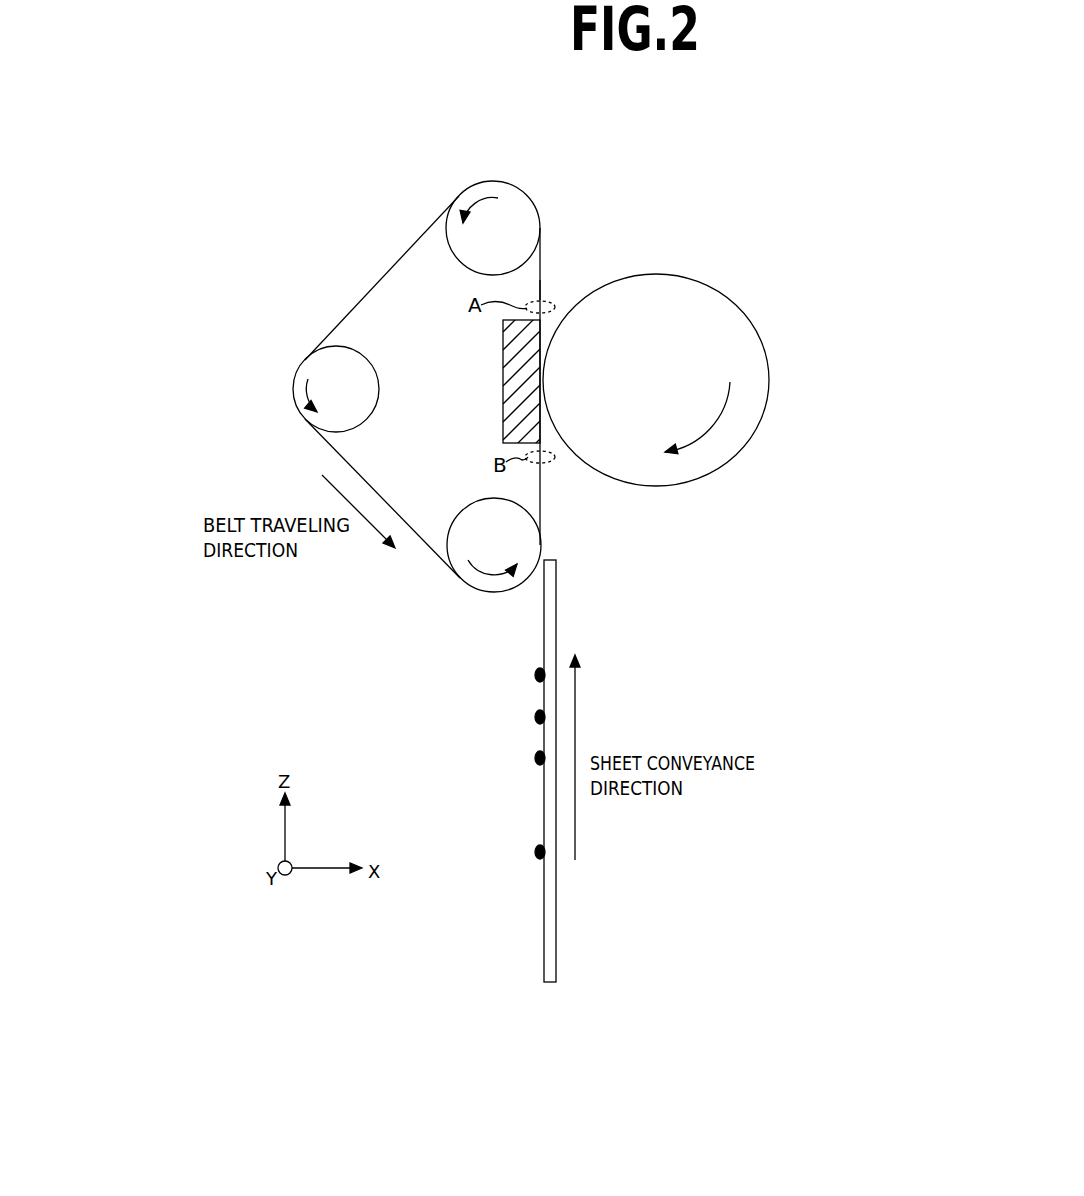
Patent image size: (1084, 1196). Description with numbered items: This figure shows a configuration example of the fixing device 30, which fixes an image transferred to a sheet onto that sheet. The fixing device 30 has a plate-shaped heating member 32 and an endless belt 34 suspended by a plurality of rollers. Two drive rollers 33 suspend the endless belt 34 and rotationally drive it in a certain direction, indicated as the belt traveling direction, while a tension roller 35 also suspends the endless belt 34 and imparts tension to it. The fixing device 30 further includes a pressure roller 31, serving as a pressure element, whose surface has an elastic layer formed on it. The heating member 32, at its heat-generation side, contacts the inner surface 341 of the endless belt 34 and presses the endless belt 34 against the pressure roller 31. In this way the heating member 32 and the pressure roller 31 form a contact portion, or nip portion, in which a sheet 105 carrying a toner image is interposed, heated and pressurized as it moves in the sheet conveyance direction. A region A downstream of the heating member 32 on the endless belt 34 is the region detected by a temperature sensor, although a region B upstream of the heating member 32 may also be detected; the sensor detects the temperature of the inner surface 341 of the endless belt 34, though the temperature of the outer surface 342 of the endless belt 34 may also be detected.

The fixing device 30 is at (740, 167).
The pressure roller 31 is at (735, 297).
The heating member 32 is at (503, 362).
The drive rollers 33 is at (534, 212).
The endless belt 34 is at (445, 387).
The tension roller 35 is at (368, 364).
The inner surface 341 is at (540, 290).
The outer surface 342 is at (541, 270).
The sheet 105 is at (556, 876).